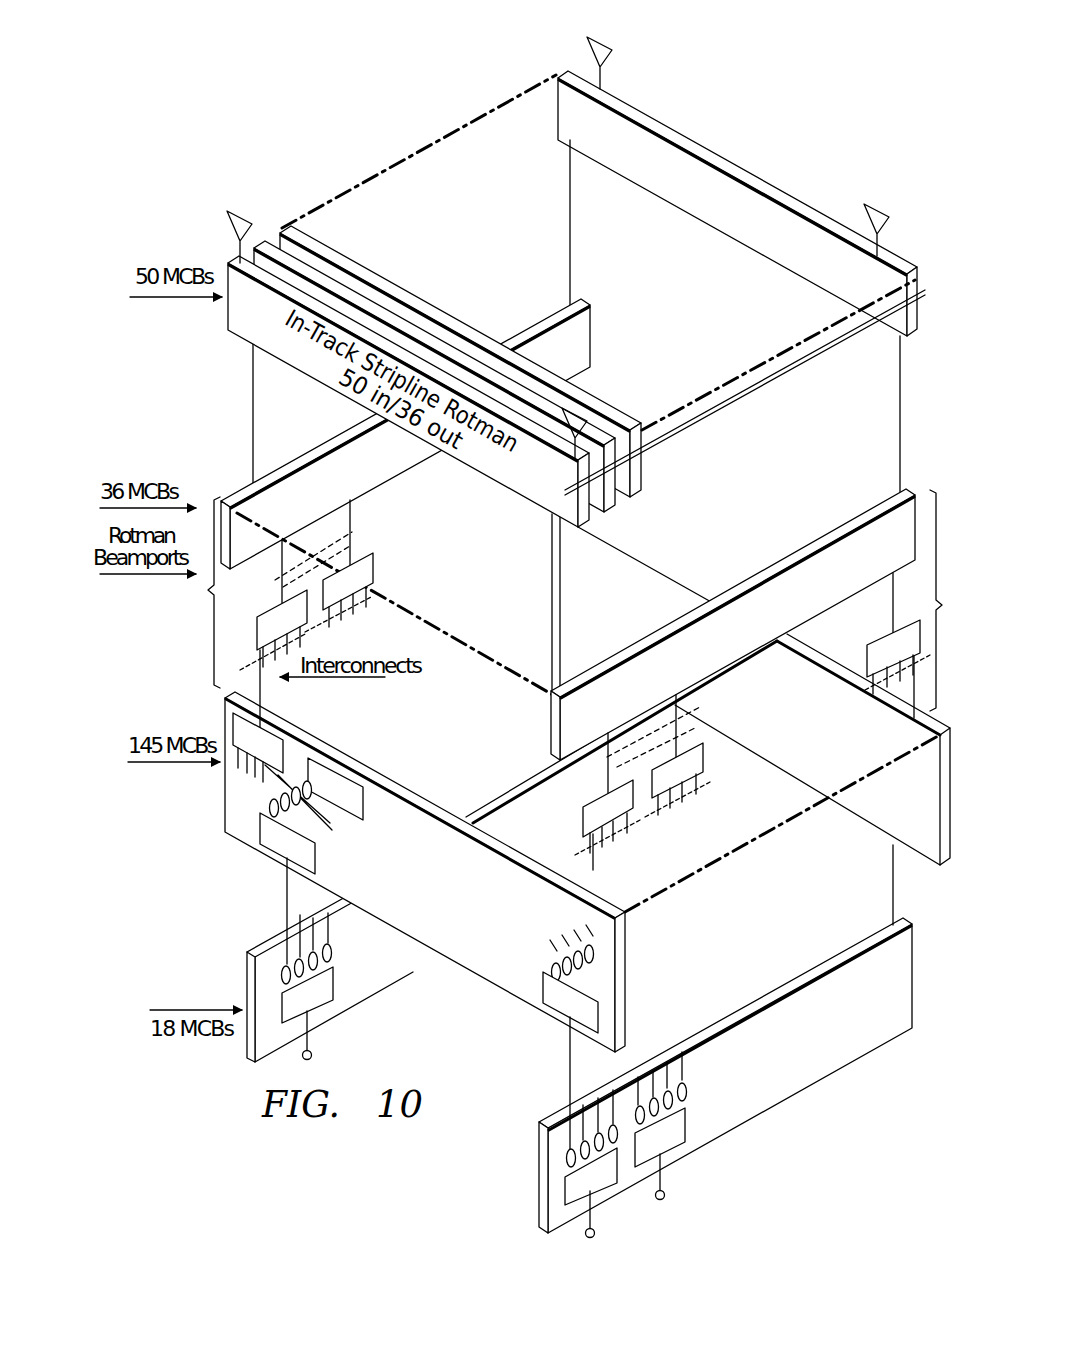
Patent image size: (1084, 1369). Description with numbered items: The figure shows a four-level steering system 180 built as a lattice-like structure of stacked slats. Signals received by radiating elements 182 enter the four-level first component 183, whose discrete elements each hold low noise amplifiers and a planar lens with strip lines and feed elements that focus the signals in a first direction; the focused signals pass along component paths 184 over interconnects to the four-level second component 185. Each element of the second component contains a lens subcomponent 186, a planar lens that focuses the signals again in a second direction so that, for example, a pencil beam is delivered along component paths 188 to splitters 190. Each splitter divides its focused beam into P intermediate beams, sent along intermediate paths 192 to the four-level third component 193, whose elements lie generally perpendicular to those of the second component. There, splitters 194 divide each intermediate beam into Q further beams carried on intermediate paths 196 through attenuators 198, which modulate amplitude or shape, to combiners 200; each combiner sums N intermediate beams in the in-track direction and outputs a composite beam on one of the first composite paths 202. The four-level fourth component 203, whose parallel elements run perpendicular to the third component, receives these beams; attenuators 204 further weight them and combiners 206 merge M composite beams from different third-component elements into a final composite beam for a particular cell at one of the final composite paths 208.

The four-level steering system 180 is at (752, 60).
The radiating elements 182 is at (586, 52).
The four-level first component 183 is at (748, 382).
The component paths 184 is at (570, 222).
The four-level second component 185 is at (573, 600).
The lens subcomponent 186 is at (800, 560).
The component paths 188 is at (340, 532).
The splitters 190 is at (268, 612).
The intermediate paths 192 is at (385, 598).
The four-level third component 193 is at (548, 596).
The splitters 194 is at (270, 732).
The intermediate paths 196 is at (340, 838).
The attenuators 198 is at (258, 796).
The combiners 200 is at (258, 825).
The first composite paths 202 is at (272, 958).
The four-level fourth component 203 is at (262, 946).
The attenuators 204 is at (346, 954).
The combiners 206 is at (337, 982).
The final composite paths 208 is at (313, 1056).